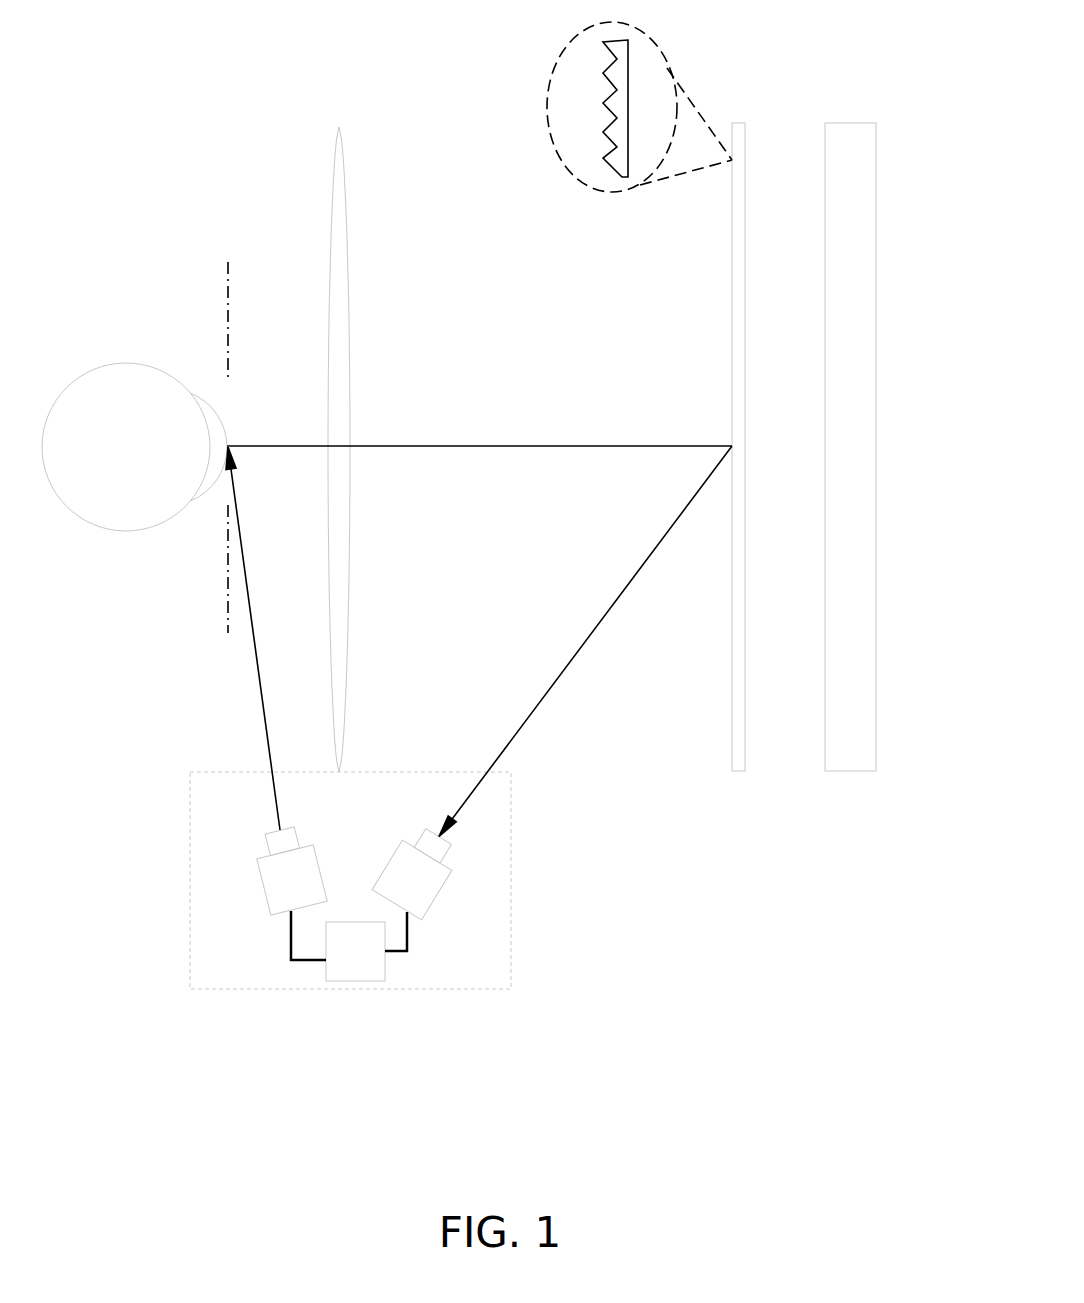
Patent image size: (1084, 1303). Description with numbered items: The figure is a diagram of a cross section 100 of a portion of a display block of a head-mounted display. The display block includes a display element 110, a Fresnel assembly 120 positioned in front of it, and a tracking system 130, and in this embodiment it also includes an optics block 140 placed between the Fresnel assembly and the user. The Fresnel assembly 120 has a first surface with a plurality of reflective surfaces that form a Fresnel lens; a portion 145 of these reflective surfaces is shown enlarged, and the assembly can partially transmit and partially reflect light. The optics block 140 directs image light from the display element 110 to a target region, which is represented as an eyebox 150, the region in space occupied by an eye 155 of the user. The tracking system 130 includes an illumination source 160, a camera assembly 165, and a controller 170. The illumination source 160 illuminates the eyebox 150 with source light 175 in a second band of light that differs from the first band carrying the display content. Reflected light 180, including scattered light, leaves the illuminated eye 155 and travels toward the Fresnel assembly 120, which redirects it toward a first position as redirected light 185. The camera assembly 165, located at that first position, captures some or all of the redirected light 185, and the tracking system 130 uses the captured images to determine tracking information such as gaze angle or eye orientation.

The cross section 100 is at (51, 65).
The display element 110 is at (876, 245).
The Fresnel assembly 120 is at (745, 771).
The tracking system 130 is at (512, 973).
The optics block 140 is at (342, 135).
The portion 145 is at (622, 178).
The eyebox 150 is at (227, 295).
The eye 155 is at (67, 508).
The illumination source 160 is at (264, 900).
The camera assembly 165 is at (407, 883).
The controller 170 is at (358, 960).
The source light 175 is at (260, 685).
The reflected light 180 is at (522, 446).
The redirected light 185 is at (535, 710).